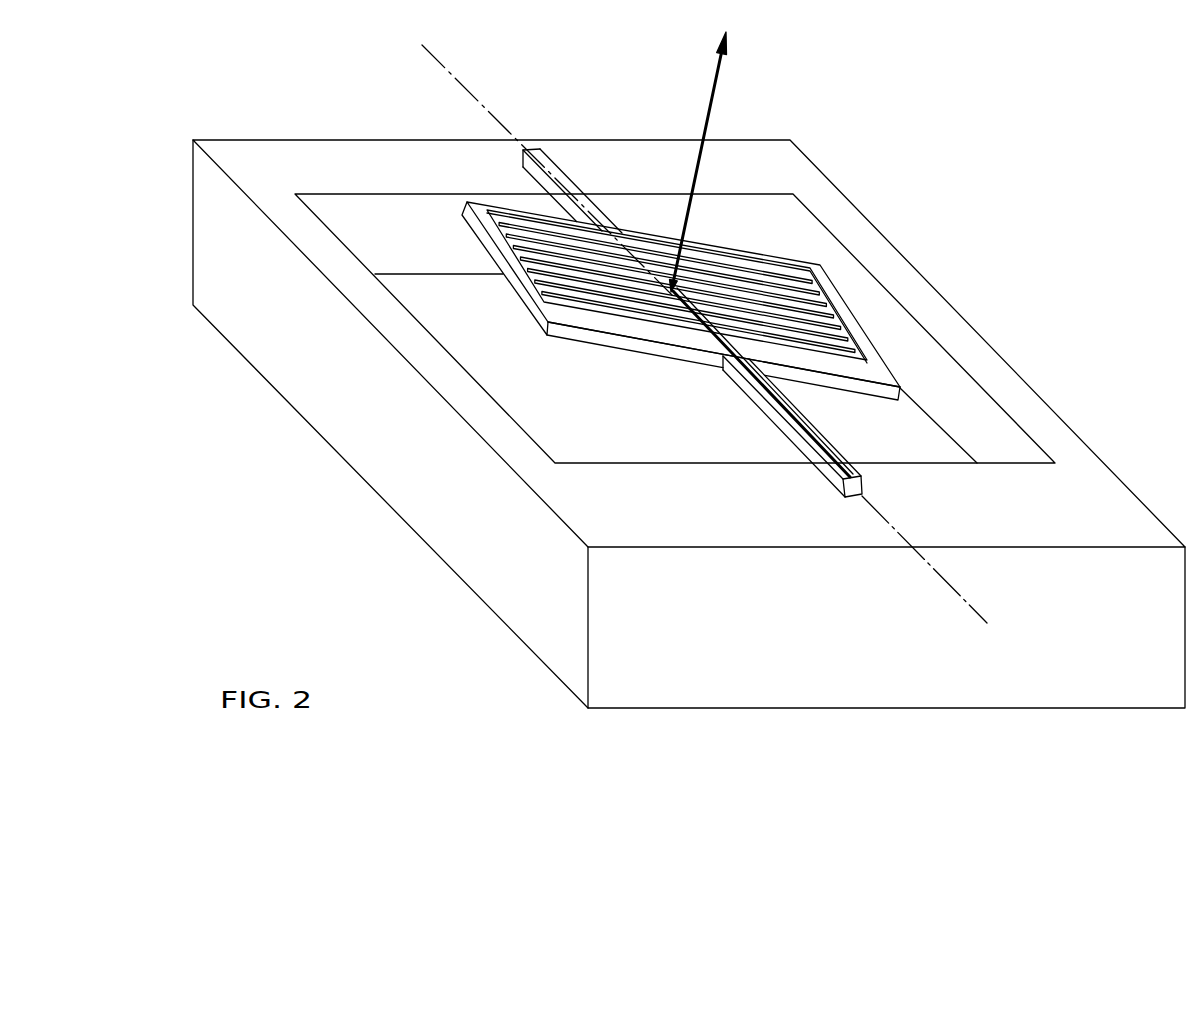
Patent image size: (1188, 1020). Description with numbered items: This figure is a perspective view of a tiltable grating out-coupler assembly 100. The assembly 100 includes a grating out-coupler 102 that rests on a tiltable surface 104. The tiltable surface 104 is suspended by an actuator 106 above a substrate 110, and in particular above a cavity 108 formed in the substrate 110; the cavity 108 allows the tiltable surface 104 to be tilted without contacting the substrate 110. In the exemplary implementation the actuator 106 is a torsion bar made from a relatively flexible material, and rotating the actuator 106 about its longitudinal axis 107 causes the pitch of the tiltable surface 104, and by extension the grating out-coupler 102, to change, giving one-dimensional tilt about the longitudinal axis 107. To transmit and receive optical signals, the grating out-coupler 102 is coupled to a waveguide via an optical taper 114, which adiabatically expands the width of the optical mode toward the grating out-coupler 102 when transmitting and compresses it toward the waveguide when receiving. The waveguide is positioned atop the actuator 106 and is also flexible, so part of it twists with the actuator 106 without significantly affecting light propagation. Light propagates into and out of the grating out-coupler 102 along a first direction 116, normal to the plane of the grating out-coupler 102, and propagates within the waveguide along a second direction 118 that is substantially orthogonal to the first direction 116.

The tiltable grating out-coupler assembly 100 is at (1062, 150).
The grating out-coupler 102 is at (817, 285).
The tiltable surface 104 is at (876, 373).
The actuator 106 is at (563, 177).
The longitudinal axis 107 is at (468, 92).
The cavity 108 is at (399, 237).
The substrate 110 is at (302, 158).
The optical taper 114 is at (692, 328).
The first direction 116 is at (710, 108).
The second direction 118 is at (811, 432).